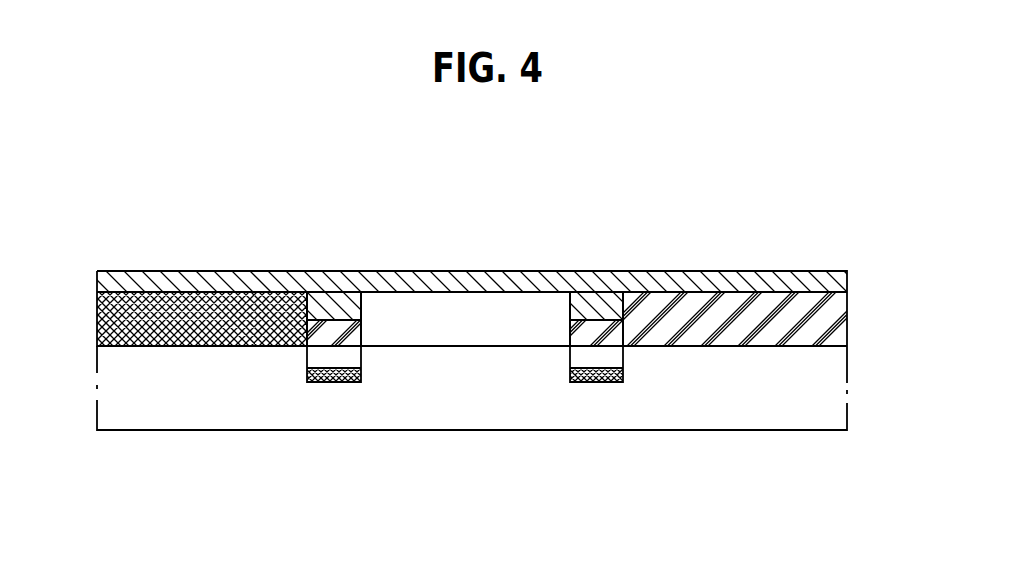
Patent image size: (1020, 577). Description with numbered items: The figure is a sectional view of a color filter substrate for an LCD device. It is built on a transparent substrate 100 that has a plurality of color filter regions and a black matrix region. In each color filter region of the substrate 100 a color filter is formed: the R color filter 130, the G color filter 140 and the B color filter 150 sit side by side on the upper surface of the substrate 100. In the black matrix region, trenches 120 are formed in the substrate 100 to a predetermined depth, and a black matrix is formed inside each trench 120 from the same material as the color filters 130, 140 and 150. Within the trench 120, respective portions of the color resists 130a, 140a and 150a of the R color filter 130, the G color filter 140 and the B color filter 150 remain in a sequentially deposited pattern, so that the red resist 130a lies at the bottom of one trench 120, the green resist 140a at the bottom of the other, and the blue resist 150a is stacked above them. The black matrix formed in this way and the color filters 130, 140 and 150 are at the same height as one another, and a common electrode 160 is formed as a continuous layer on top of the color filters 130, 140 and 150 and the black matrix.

The transparent substrate 100 is at (828, 387).
The trench 120 is at (349, 383).
The R color filter 130 is at (97, 322).
The color resist of the R color filter 130a is at (335, 383).
The G color filter 140 is at (470, 307).
The color resist of the G color filter 140a is at (595, 357).
The B color filter 150 is at (827, 327).
The color resist of the B color filter 150a is at (597, 322).
The common electrode 160 is at (830, 283).